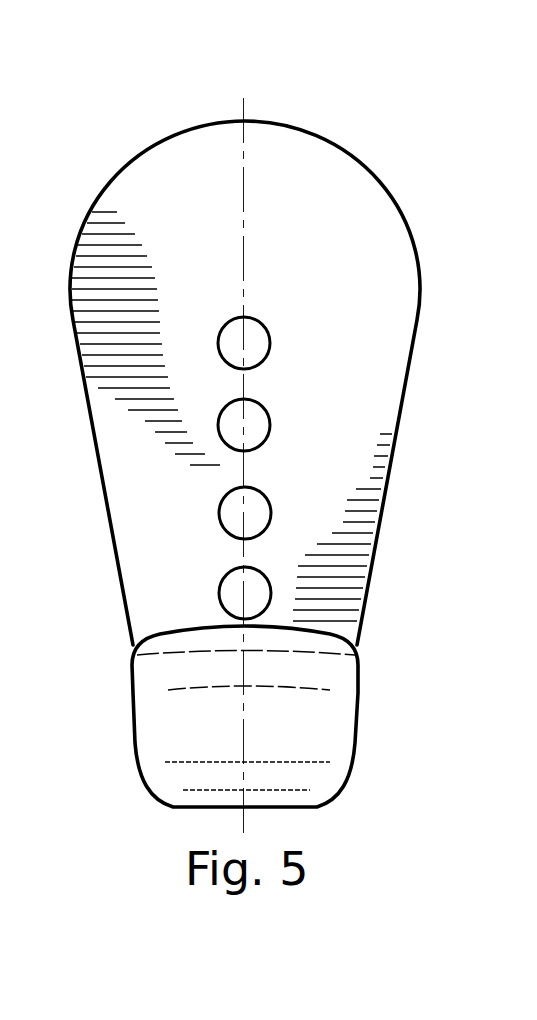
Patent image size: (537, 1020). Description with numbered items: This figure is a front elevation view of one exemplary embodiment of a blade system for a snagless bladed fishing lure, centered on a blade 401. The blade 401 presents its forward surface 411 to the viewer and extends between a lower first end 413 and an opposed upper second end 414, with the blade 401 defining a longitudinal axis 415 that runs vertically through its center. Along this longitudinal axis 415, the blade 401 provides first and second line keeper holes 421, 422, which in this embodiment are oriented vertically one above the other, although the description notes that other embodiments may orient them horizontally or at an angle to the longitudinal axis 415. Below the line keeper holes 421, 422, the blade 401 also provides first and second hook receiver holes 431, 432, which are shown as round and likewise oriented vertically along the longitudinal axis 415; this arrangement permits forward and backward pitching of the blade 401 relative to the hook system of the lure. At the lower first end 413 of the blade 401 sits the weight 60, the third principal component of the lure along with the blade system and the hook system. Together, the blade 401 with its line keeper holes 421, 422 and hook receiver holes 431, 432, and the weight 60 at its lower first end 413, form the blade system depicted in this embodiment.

The weight 60 is at (273, 727).
The blade 401 is at (340, 265).
The forward surface 411 is at (331, 232).
The lower first end 413 is at (347, 652).
The upper second end 414 is at (263, 162).
The longitudinal axis 415 is at (243, 382).
The first line keeper hole 421 is at (272, 342).
The second line keeper hole 422 is at (272, 414).
The first hook receiver hole 431 is at (218, 505).
The second hook receiver hole 432 is at (218, 585).